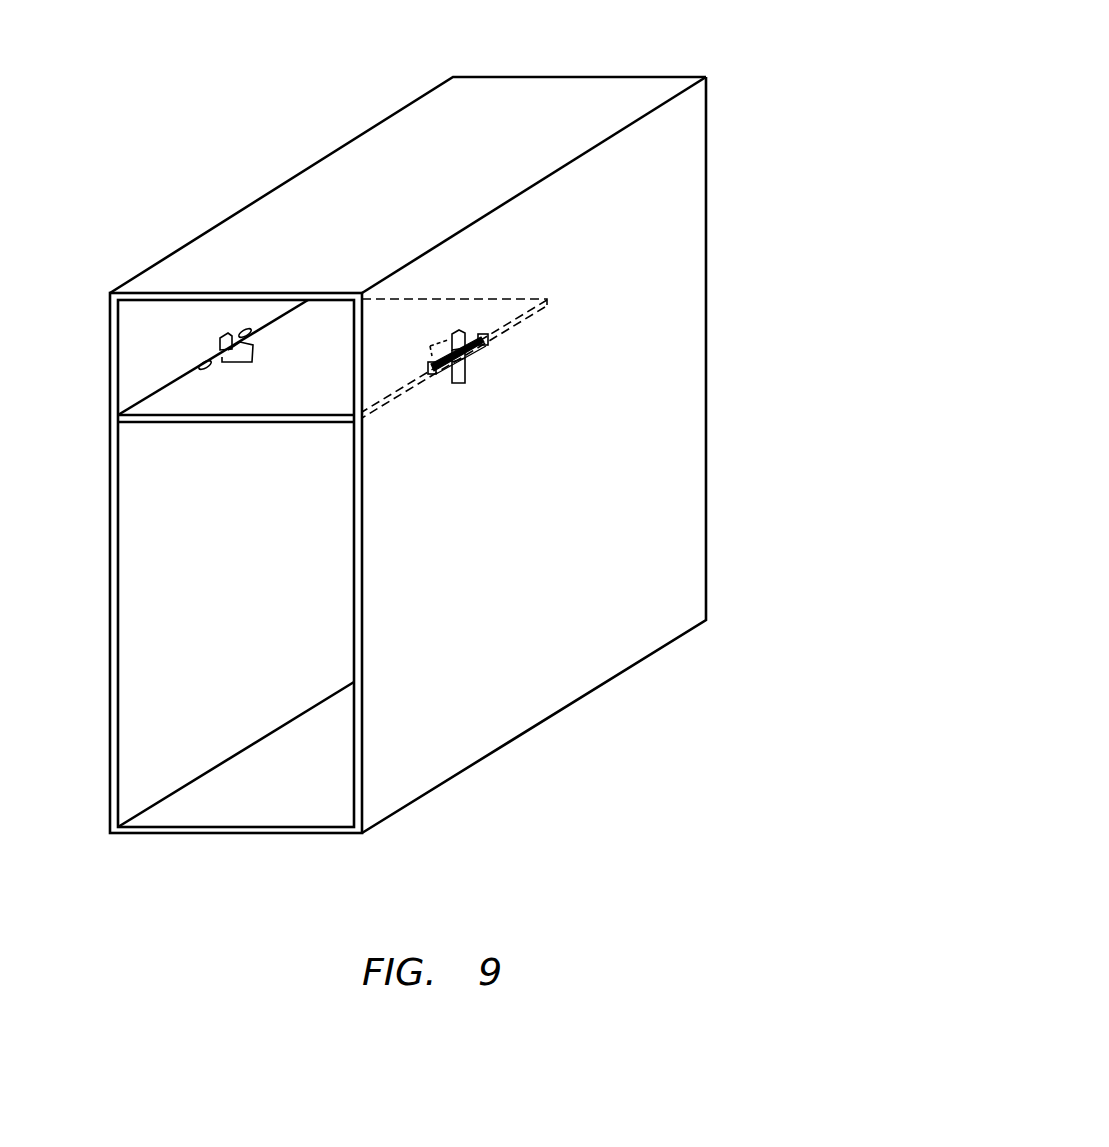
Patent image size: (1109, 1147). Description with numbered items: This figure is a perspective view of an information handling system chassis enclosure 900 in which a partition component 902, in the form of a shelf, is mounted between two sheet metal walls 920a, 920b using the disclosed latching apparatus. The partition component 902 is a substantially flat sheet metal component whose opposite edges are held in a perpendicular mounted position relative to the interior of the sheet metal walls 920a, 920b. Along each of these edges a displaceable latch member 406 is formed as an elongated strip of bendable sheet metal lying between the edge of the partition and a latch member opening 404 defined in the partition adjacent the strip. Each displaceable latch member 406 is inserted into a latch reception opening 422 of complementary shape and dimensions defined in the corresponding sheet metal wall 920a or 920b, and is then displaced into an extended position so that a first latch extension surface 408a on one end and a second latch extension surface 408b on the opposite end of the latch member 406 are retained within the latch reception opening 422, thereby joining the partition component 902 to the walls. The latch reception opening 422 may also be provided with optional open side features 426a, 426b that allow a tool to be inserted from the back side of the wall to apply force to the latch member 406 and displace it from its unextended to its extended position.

The information handling system chassis enclosure 900 is at (813, 54).
The sheet metal wall 920a is at (134, 334).
The sheet metal wall 920b is at (453, 550).
The partition component 902 is at (300, 402).
The open side feature 426a is at (222, 333).
The open side feature 426b is at (463, 390).
The latch member opening 404 is at (250, 352).
The displaceable latch member 406 is at (224, 364).
The first latch extension surface 408a is at (435, 378).
The second latch extension surface 408b is at (487, 340).
The latch reception opening 422 is at (468, 366).